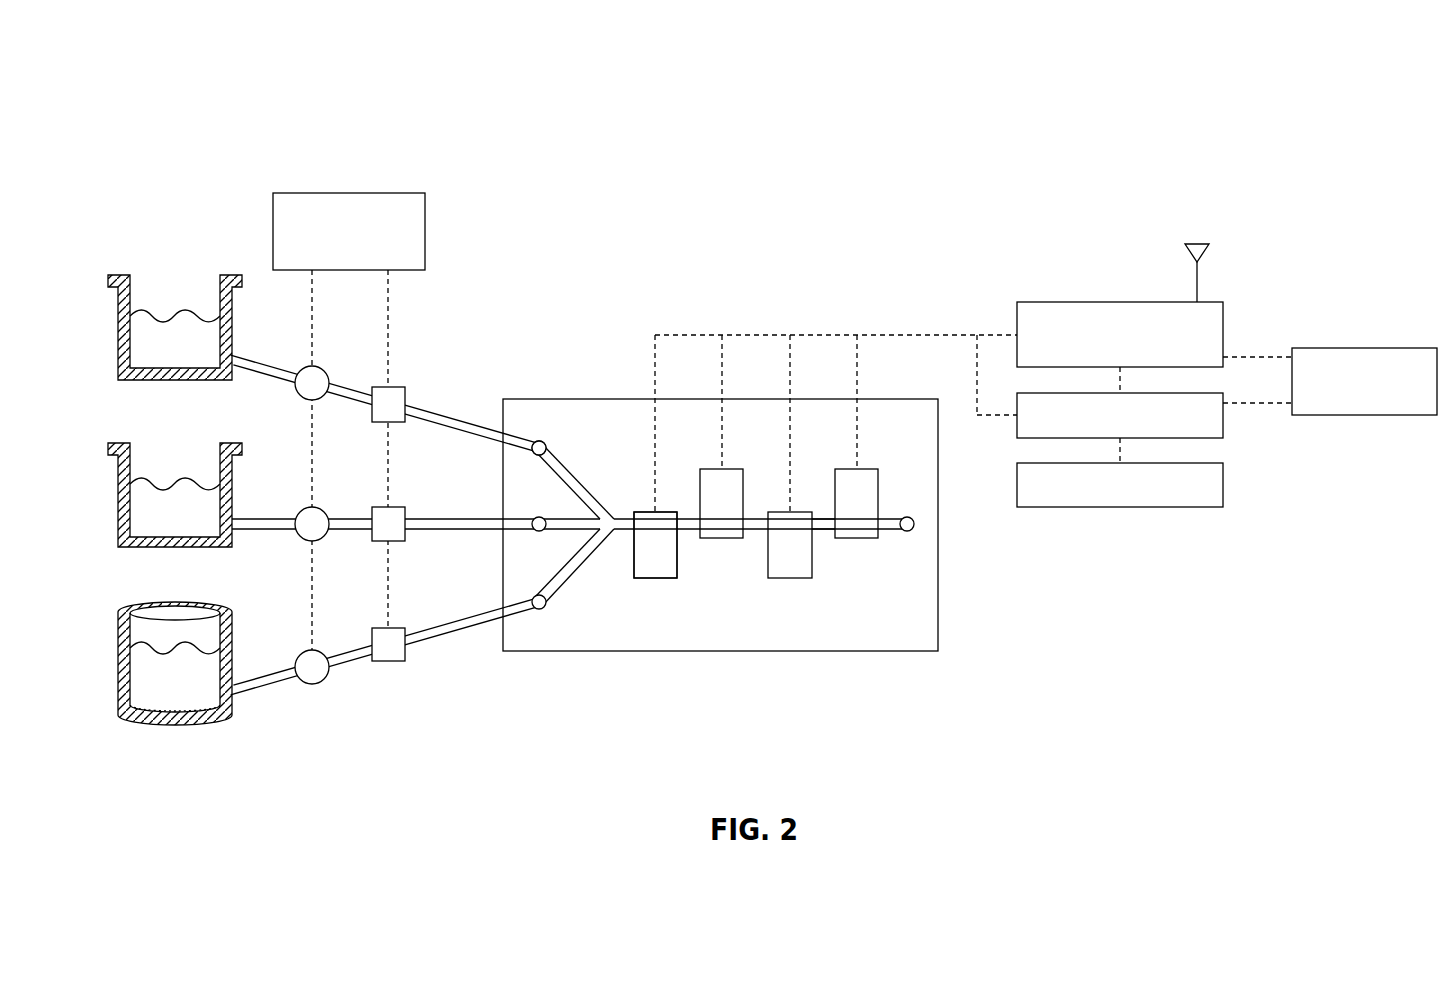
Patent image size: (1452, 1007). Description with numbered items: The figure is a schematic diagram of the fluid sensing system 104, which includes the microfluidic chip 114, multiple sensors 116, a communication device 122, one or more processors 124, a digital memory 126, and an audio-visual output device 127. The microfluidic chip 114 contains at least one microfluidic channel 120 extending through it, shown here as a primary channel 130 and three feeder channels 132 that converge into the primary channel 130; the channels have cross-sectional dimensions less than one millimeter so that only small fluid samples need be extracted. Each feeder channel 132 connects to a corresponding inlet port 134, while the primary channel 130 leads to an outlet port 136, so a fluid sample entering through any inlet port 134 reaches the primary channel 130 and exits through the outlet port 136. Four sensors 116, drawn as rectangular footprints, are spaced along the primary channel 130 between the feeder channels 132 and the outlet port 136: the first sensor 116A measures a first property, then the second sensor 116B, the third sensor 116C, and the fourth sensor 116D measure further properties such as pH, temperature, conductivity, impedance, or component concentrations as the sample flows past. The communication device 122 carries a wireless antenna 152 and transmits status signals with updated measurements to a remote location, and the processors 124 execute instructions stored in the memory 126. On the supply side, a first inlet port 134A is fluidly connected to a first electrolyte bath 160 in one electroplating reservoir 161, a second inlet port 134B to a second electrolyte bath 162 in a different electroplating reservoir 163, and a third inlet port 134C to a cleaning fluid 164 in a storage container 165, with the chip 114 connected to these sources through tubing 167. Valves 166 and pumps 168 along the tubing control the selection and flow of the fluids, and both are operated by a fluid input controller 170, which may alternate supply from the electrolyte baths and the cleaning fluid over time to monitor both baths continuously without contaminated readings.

The fluid sensing system 104 is at (633, 273).
The microfluidic chip 114 is at (558, 405).
The sensors 116 is at (640, 558).
The first sensor 116A is at (657, 579).
The second sensor 116B is at (720, 539).
The third sensor 116C is at (800, 579).
The fourth sensor 116D is at (857, 539).
The microfluidic channel 120 is at (598, 505).
The communication device 122 is at (1225, 335).
The processors 124 is at (1225, 423).
The memory 126 is at (1225, 480).
The AV output device 127 is at (1365, 348).
The primary channel 130 is at (822, 531).
The feeder channels 132 is at (566, 474).
The inlet ports 134 is at (539, 441).
The first inlet port 134A is at (531, 448).
The second inlet port 134B is at (531, 524).
The third inlet port 134C is at (540, 611).
The outlet port 136 is at (916, 528).
The wireless antenna 152 is at (1197, 285).
The first electrolyte bath 160 is at (157, 323).
The electroplating reservoir 161 is at (122, 352).
The second electrolyte bath 162 is at (157, 492).
The electroplating reservoir 163 is at (122, 525).
The cleaning fluid 164 is at (163, 693).
The storage container 165 is at (120, 690).
The valves 166 is at (305, 367).
The tubing 167 is at (252, 373).
The pumps 168 is at (390, 388).
The fluid input controller 170 is at (320, 193).